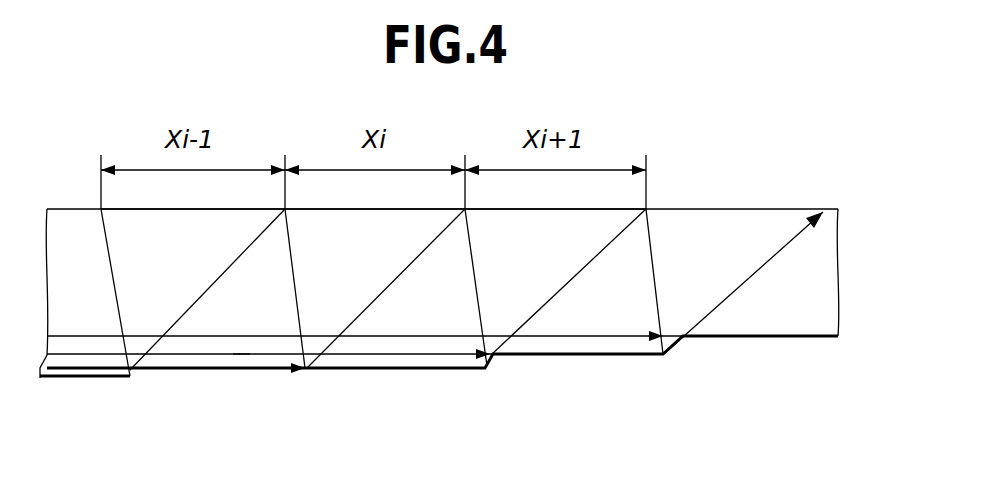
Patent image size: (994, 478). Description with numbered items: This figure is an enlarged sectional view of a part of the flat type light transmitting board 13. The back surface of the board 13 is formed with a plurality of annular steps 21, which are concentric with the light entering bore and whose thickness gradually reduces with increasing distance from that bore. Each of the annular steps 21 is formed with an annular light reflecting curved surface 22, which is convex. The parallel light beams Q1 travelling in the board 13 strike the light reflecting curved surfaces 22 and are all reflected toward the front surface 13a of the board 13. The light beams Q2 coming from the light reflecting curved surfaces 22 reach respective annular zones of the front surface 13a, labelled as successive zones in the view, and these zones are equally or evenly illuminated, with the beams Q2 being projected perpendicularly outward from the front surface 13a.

The light transmitting board 13 is at (838, 265).
The front surface 13a is at (728, 209).
The annular steps 21 is at (83, 378).
The light reflecting curved surfaces 22 is at (132, 377).
The parallel light beams Q1 is at (250, 367).
The light beams Q2 is at (115, 272).